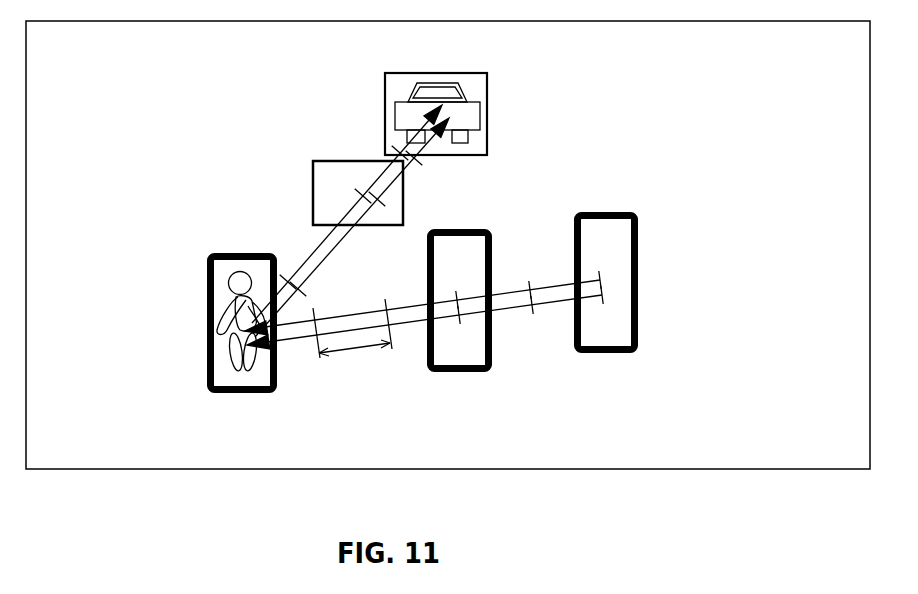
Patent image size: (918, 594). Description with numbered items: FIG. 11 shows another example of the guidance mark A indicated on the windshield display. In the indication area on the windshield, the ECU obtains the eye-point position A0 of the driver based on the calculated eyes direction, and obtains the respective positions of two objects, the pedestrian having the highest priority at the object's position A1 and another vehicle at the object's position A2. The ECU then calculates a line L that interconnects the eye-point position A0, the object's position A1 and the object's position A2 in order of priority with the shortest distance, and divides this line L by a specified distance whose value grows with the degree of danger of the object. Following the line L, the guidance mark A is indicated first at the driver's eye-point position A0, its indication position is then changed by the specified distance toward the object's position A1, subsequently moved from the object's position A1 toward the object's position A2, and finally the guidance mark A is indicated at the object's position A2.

The object's position A1 is at (168, 306).
The object's position A2 is at (433, 99).
The eye-point position A0 is at (704, 267).
The guidance mark A is at (401, 251).
The line L is at (403, 305).